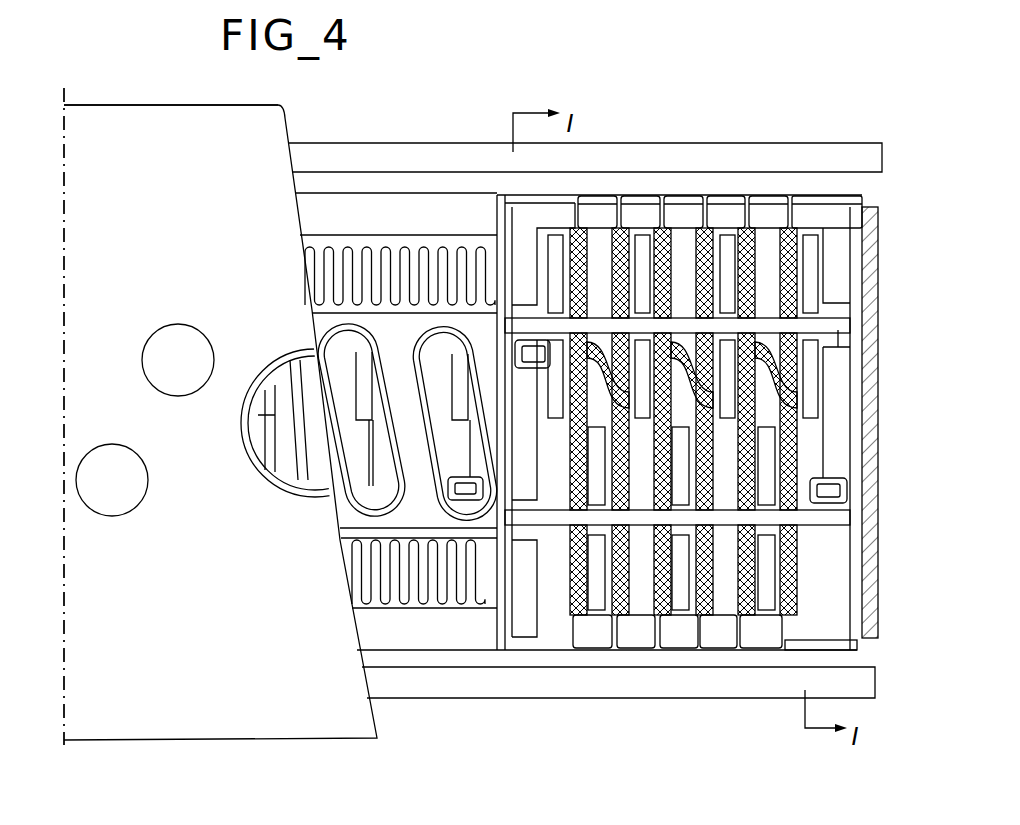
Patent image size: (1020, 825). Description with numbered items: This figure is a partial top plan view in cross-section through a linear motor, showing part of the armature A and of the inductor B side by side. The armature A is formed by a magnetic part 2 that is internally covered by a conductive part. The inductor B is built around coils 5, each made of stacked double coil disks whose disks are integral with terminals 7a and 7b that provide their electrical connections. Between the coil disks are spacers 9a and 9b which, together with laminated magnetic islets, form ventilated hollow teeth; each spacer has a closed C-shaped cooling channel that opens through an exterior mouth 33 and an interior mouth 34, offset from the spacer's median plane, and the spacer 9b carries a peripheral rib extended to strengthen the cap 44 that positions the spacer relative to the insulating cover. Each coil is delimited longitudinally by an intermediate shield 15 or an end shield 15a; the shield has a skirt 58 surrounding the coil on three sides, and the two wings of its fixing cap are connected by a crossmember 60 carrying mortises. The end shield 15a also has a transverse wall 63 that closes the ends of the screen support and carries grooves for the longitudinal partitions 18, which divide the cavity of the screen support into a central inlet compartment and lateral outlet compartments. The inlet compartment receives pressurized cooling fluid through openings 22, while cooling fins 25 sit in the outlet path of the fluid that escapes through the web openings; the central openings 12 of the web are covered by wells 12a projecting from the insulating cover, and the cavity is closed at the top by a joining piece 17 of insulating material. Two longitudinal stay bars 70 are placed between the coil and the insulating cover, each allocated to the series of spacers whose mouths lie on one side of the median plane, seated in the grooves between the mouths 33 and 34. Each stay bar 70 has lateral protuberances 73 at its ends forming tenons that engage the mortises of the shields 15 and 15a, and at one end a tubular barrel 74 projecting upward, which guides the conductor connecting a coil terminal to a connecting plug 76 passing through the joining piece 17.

The joining piece 17 is at (148, 145).
The connecting plug 76 is at (185, 345).
The openings 22 is at (285, 365).
The magnetic part 2 is at (706, 160).
The skirt 58 is at (825, 645).
The cooling fins 25 is at (368, 262).
The longitudinal partitions 18 is at (345, 533).
The openings 12 is at (380, 458).
The wells 12a is at (350, 490).
The interior mouth 34 is at (365, 372).
The exterior mouth 33 is at (810, 265).
The end shield 15a is at (505, 637).
The crossmember 60 is at (522, 270).
The stay bar 70 is at (800, 520).
The coil 5 is at (785, 632).
The terminal 7b is at (560, 420).
The spacer 9a is at (815, 215).
The spacer 9b is at (718, 652).
The cap 44 is at (636, 632).
The intermediate shield 15 is at (835, 420).
The transverse wall 63 is at (872, 312).
The lateral protuberances 73 is at (512, 342).
The tubular barrel 74 is at (838, 492).
The terminal 7a is at (597, 333).
The armature A is at (752, 130).
The inductor B is at (515, 657).